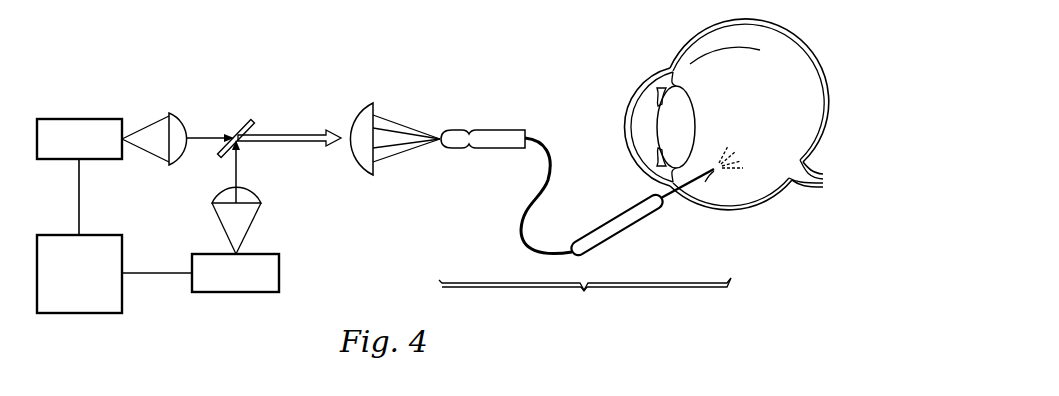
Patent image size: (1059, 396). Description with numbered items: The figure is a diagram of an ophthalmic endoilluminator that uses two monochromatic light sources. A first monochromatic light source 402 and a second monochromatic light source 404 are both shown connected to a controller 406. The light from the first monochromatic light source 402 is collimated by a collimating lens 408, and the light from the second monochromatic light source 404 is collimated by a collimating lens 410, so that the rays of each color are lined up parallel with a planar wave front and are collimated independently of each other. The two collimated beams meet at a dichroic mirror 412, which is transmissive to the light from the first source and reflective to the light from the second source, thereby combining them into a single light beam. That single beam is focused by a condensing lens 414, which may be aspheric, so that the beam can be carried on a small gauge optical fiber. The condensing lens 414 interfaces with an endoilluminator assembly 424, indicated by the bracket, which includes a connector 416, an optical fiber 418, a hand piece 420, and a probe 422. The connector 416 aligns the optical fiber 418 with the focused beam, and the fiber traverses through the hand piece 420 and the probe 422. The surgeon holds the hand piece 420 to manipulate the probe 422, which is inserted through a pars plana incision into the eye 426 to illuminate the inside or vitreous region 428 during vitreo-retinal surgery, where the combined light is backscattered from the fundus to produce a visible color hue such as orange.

The first monochromatic light source 402 is at (62, 118).
The second monochromatic light source 404 is at (217, 293).
The controller 406 is at (62, 314).
The collimating lens 408 is at (183, 167).
The collimating lens 410 is at (258, 190).
The dichroic mirror 412 is at (245, 120).
The condensing lens 414 is at (353, 114).
The connector 416 is at (492, 129).
The optical fiber 418 is at (518, 221).
The hand piece 420 is at (615, 238).
The probe 422 is at (705, 182).
The endoilluminator assembly 424 is at (585, 297).
The eye 426 is at (766, 46).
The vitreous region 428 is at (710, 62).